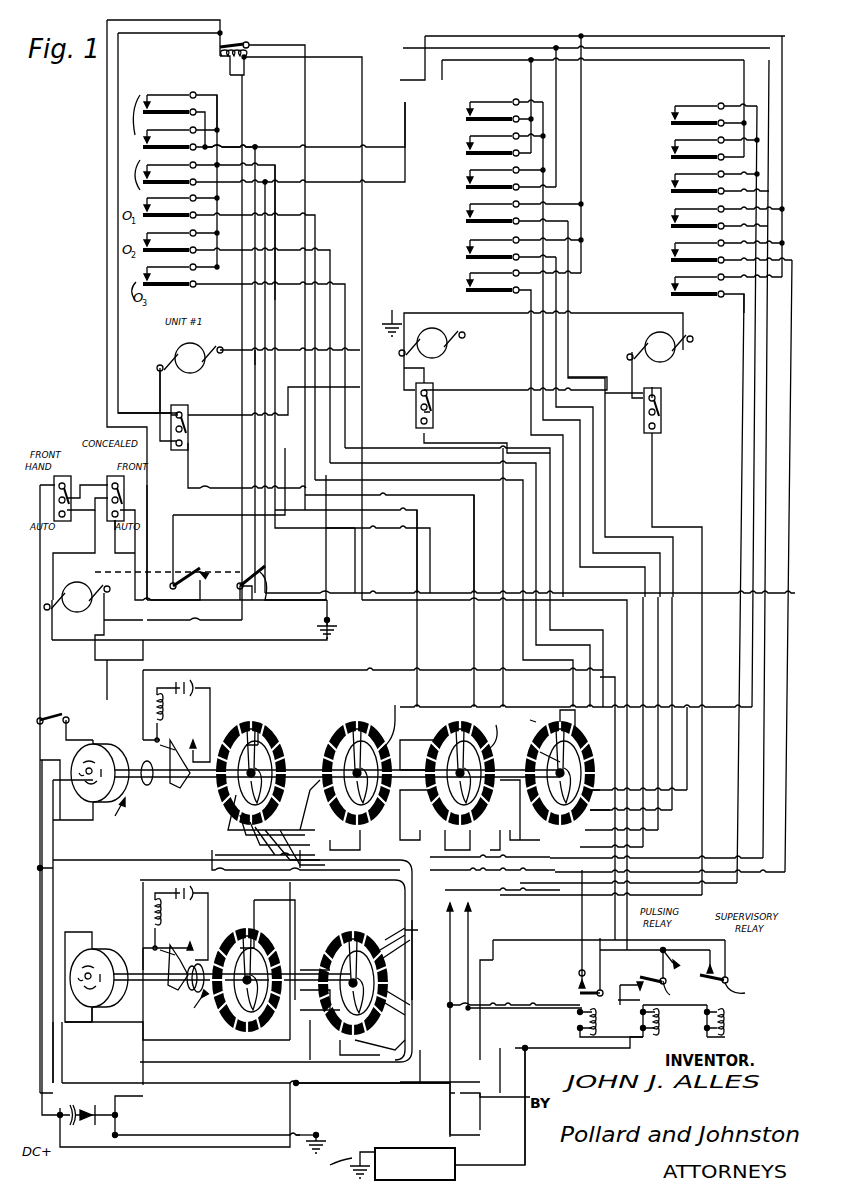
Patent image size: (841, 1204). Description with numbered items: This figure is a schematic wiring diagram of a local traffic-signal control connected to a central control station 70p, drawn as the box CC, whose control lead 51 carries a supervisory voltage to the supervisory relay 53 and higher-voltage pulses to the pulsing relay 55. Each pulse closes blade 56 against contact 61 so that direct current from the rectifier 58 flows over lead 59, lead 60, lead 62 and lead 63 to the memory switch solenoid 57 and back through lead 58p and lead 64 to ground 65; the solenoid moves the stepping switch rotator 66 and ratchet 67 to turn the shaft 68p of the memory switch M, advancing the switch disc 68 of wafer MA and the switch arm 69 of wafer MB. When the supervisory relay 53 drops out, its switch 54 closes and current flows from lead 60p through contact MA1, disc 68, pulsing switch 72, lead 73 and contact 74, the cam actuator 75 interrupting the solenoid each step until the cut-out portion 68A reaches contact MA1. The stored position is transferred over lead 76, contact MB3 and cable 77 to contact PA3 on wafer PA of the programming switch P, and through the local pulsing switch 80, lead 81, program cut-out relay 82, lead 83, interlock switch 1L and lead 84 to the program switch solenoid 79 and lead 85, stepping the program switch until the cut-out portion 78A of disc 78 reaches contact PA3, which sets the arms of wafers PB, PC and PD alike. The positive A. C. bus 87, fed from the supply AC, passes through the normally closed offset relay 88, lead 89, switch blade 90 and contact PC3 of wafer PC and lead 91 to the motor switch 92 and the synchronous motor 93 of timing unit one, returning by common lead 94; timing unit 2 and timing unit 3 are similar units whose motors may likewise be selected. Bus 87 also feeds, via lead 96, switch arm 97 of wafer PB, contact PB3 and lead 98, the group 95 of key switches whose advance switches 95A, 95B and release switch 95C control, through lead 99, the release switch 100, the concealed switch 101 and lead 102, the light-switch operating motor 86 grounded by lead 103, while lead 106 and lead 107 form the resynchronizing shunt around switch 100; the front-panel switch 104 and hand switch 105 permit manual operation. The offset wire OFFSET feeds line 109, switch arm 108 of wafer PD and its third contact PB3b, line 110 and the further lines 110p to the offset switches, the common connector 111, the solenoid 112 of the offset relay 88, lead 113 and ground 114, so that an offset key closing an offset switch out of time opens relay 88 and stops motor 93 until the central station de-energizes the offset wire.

The positive A. C. bus 87 is at (106, 272).
The offset relay 88 is at (248, 40).
The solenoid of the offset relay 112 is at (236, 66).
The group of switches 95 is at (143, 95).
The advance switch 95A is at (175, 95).
The advance switch 95B is at (182, 120).
The release switch 95C is at (281, 201).
The common connector 111 is at (246, 92).
The lead 99 is at (252, 136).
The lead 98 is at (220, 112).
The lead 89 is at (308, 122).
The lead 113 is at (364, 122).
The lead 106 is at (266, 240).
The line 110 is at (230, 290).
The motor 93 is at (220, 335).
The common lead 94 is at (238, 360).
The motor switch 92 is at (170, 452).
The front panel switch 104 is at (68, 476).
The concealed switch 101 is at (112, 470).
The lead 102 is at (92, 545).
The light switch operating shaft motor 86 is at (72, 612).
The lead 107 is at (205, 608).
The release switch 100 is at (185, 558).
The interlock switch 1L is at (275, 575).
The lead 103 is at (282, 606).
The ground 114 is at (332, 626).
The lead 84 is at (168, 648).
The hand switch 105 is at (58, 700).
The conductors 110p is at (470, 452).
The lead 91 is at (480, 560).
The timing unit No. 2 is at (583, 315).
The timing unit No. 3 is at (698, 459).
The lead 81 is at (270, 668).
The program switch solenoid 79 is at (112, 745).
The programming switch P is at (336, 801).
The local pulsing switch 80 is at (178, 735).
The switch disc 78 is at (238, 718).
The cut-out portion 78A is at (258, 730).
The switch wafer PA is at (283, 722).
The contact PA3 is at (306, 825).
The switch arm 97 is at (350, 748).
The wafer PB is at (352, 722).
The contact PB3 is at (393, 721).
The switch blade 90 is at (462, 720).
The wafer PC is at (436, 730).
The contact PC3 is at (491, 727).
The switch wafer PD is at (560, 728).
The switch arm 108 is at (536, 749).
The contact PD3 PB3b is at (579, 811).
The lead 83 is at (630, 755).
The lead 85 is at (58, 850).
The lead 96 is at (150, 868).
The lead 73 is at (380, 888).
The line 109 is at (488, 862).
The lead 60p is at (290, 900).
The stepping switch rotator 66 is at (88, 935).
The memory switch solenoid 57 is at (112, 960).
The A. C. power source AC is at (40, 1005).
The memory pulsing switch blade 72 is at (180, 940).
The local pulsing switch actuator 75 is at (165, 962).
The ratchet 67 is at (190, 992).
The memory switch M is at (250, 1002).
The lead 58p is at (100, 1015).
The switch disc 68 is at (240, 935).
The blank space 68A is at (272, 905).
The contact MA1 is at (248, 935).
The stepping switch shaft 68p is at (226, 1022).
The wafer MA is at (250, 1040).
The switch contact arm 69 is at (335, 945).
The lead 76 is at (345, 1000).
The wafer MB is at (380, 1020).
The contact MB3 is at (395, 965).
The cable 77 is at (410, 918).
The offset wire OFFSET is at (509, 1020).
The lead 63 is at (200, 1080).
The rectifier 58 is at (76, 1106).
The lead 64 is at (240, 1130).
The lead 59 is at (200, 1152).
The ground 65 is at (332, 1150).
The central control station 70p is at (337, 1165).
The central control station CC is at (415, 1164).
The central station lead 51 is at (482, 1152).
The lead 60 is at (405, 1080).
The program cut-out relay 82 is at (575, 993).
The lead 62 is at (640, 958).
The contact 61 is at (640, 985).
The switch contact 56 is at (680, 998).
The contact 74 is at (700, 972).
The switch 54 is at (745, 993).
The pulsing relay 55 is at (664, 1022).
The supervisory relay 53 is at (732, 1013).